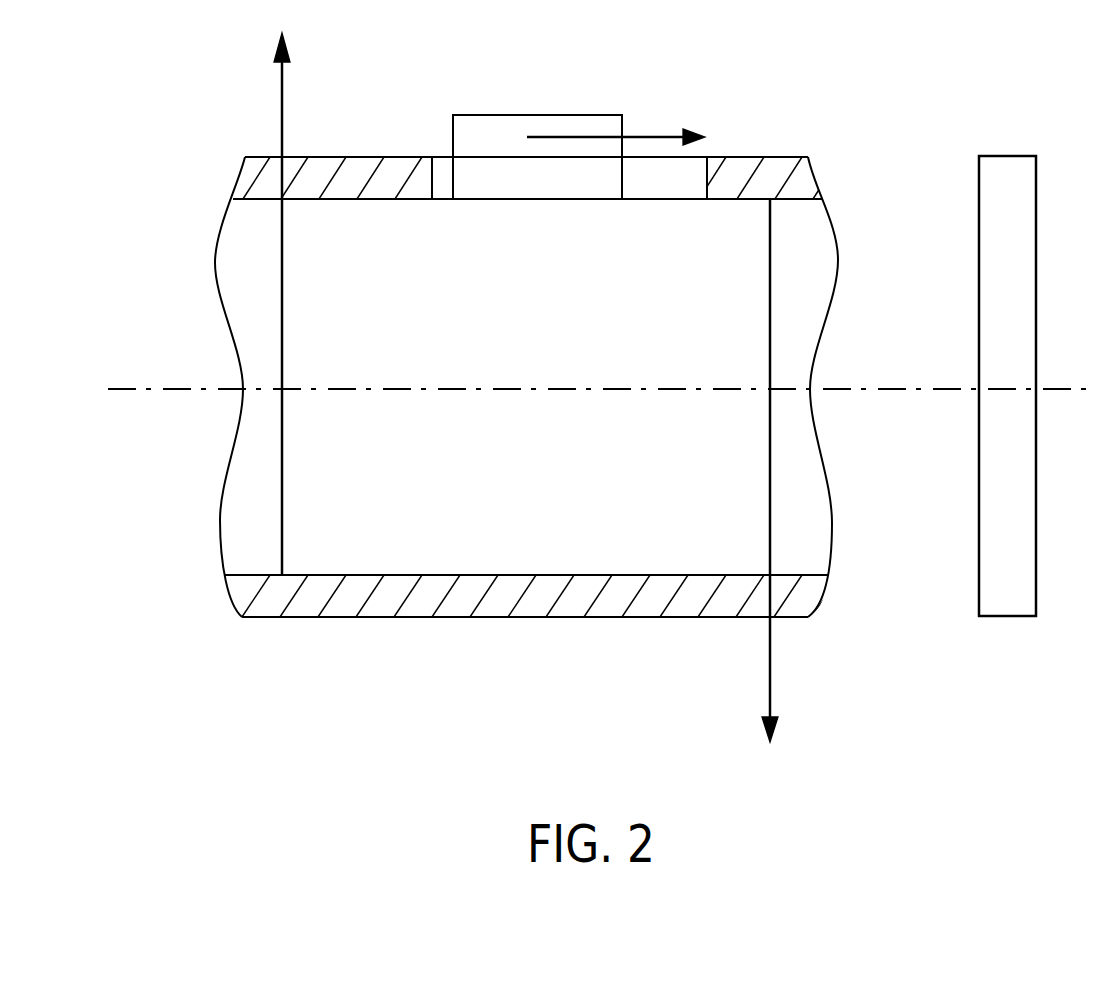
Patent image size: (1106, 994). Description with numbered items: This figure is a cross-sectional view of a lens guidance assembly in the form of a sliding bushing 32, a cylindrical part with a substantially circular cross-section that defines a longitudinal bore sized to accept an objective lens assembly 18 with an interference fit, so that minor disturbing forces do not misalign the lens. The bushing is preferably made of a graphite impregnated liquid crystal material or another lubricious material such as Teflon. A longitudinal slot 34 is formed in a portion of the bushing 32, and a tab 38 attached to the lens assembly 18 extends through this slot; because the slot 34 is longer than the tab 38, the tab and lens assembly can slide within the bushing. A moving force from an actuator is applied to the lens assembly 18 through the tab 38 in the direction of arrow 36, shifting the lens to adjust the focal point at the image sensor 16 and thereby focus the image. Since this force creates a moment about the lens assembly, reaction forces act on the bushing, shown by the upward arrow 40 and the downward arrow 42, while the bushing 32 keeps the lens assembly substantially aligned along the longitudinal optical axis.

The image sensor 16 is at (1018, 156).
The objective lens assembly 18 is at (243, 493).
The sliding bushing 32 is at (423, 603).
The longitudinal slot 34 is at (672, 193).
The arrow 36 is at (628, 133).
The tab 38 is at (528, 192).
The reactive force arrow 40 is at (283, 110).
The reactive force arrow 42 is at (771, 690).